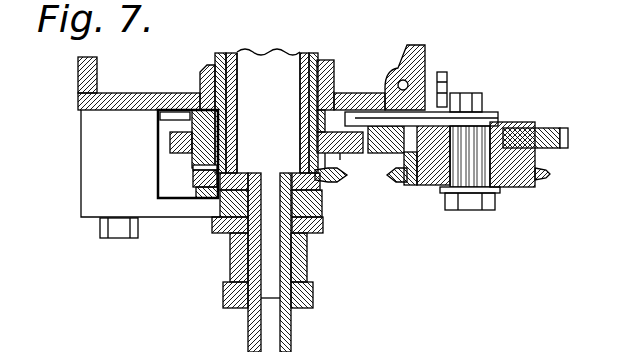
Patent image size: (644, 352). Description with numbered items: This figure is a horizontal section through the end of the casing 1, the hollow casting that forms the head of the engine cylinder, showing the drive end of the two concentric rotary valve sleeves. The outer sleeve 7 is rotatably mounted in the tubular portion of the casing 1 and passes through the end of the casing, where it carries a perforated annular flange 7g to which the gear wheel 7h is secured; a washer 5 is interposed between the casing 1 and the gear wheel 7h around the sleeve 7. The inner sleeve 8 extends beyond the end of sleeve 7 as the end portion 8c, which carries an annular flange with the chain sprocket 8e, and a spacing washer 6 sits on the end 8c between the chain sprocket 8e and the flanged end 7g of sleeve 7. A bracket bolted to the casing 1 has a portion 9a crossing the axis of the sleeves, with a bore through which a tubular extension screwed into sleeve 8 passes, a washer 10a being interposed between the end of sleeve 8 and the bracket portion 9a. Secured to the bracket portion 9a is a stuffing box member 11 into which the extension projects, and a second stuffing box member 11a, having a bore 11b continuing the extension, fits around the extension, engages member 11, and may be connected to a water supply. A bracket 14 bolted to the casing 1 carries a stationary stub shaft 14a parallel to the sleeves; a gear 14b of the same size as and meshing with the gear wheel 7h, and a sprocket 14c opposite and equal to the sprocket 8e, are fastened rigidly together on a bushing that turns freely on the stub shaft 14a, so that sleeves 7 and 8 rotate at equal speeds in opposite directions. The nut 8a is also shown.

The casing 1 is at (125, 95).
The washer 5 is at (190, 118).
The spacing washer 6 is at (200, 168).
The sleeve 7 is at (220, 103).
The perforated annular flange 7g is at (193, 155).
The gear wheel 7h is at (177, 140).
The sleeve 8 is at (234, 139).
The sleeve nut 8a is at (203, 197).
The end of sleeve 8 8c is at (237, 172).
The chain sprocket 8e is at (195, 178).
The bracket portion 9a is at (323, 207).
The washer 10a is at (325, 187).
The stuffing box member 11 is at (222, 232).
The stuffing box member 11a is at (233, 273).
The bore 11b is at (289, 328).
The bracket 14 is at (433, 113).
The stub shaft 14a is at (500, 128).
The gear 14b is at (570, 133).
The sprocket 14c is at (552, 173).